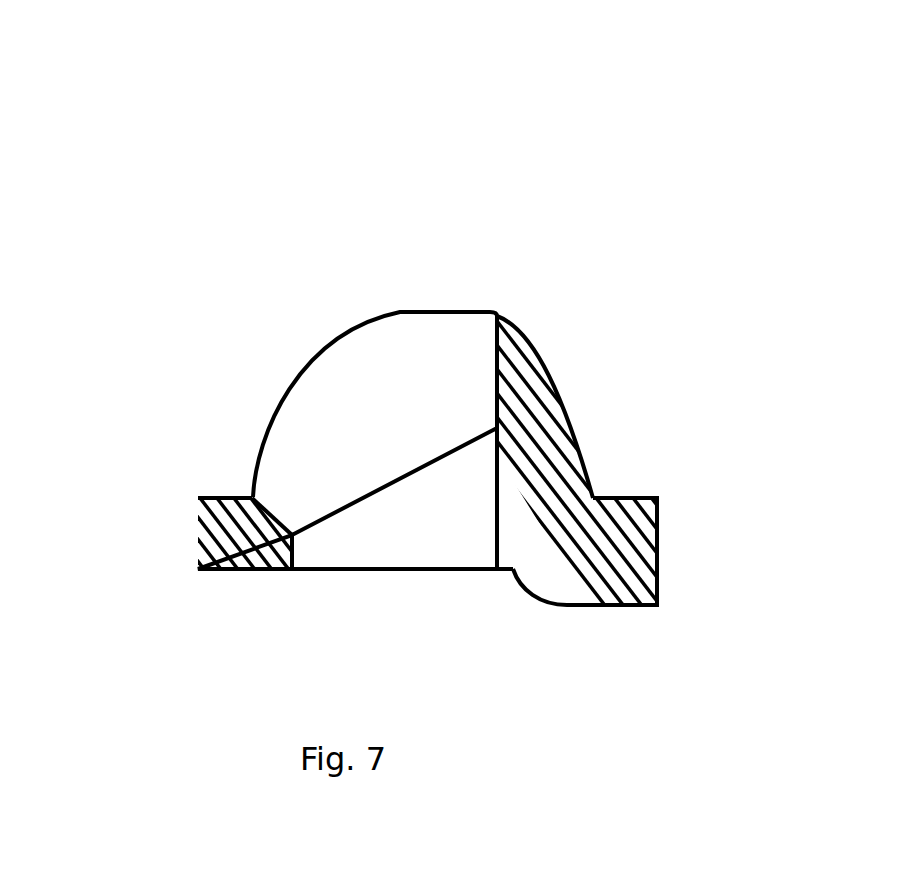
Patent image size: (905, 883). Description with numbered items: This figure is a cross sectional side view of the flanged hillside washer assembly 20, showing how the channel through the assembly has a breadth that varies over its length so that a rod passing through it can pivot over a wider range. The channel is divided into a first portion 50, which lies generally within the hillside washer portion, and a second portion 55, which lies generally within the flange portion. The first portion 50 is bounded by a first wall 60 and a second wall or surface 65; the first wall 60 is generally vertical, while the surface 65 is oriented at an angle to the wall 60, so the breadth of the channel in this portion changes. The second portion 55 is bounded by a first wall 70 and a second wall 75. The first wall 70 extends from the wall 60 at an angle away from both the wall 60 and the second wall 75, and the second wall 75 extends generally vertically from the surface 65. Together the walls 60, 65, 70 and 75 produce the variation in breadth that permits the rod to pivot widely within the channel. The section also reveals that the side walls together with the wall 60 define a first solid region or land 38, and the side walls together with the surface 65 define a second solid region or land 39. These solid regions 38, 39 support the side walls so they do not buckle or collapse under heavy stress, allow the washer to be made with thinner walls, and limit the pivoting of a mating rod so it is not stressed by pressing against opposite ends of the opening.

The hillside washer assembly 20 is at (207, 133).
The first solid region or land 38 is at (530, 374).
The second solid region or land 39 is at (268, 500).
The first portion of the channel 50 is at (417, 332).
The second portion of the channel 55 is at (387, 552).
The first wall 60 is at (503, 485).
The second wall or surface 65 is at (290, 517).
The first wall of the second portion 70 is at (552, 530).
The second wall of the second portion 75 is at (308, 553).